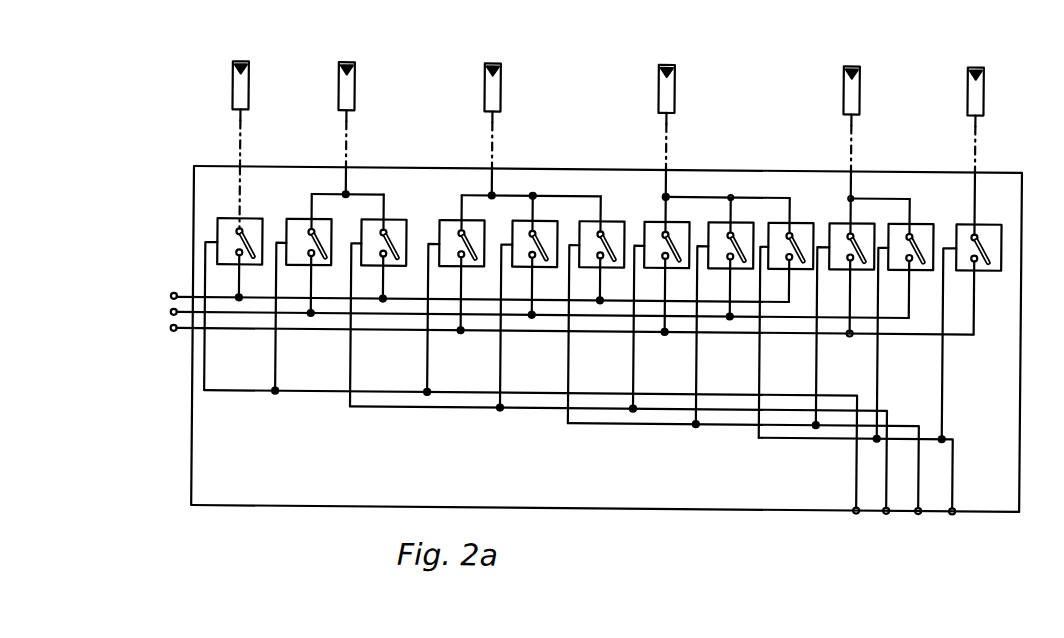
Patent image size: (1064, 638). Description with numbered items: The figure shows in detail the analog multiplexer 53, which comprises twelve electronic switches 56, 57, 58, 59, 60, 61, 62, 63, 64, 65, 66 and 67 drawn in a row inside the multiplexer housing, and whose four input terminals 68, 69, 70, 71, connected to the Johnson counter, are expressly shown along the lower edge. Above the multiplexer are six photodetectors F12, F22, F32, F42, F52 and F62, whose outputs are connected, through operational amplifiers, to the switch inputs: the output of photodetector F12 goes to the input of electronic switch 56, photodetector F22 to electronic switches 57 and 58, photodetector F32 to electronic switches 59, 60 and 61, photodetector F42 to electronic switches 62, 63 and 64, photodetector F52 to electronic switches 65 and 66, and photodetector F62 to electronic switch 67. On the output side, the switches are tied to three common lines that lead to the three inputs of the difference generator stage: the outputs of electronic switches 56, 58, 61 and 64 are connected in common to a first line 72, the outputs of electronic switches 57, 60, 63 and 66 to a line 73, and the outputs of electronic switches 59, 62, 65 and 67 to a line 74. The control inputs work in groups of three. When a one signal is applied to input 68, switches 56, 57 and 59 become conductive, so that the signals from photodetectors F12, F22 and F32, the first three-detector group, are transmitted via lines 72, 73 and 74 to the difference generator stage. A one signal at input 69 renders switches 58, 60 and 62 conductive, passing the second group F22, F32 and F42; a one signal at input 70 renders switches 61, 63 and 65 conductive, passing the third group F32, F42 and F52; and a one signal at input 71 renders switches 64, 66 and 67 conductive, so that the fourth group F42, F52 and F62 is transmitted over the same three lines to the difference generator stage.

The analog multiplexer 53 is at (1011, 261).
The electronic switch 56 is at (252, 230).
The electronic switch 57 is at (318, 228).
The electronic switch 58 is at (398, 230).
The electronic switch 59 is at (450, 230).
The electronic switch 60 is at (541, 231).
The electronic switch 61 is at (609, 230).
The electronic switch 62 is at (678, 228).
The electronic switch 63 is at (740, 228).
The electronic switch 64 is at (802, 228).
The electronic switch 65 is at (862, 226).
The electronic switch 66 is at (922, 226).
The electronic switch 67 is at (990, 227).
The input terminal 68 is at (857, 509).
The input terminal 69 is at (888, 509).
The input terminal 70 is at (920, 509).
The input terminal 71 is at (955, 509).
The first line 72 is at (173, 293).
The line 73 is at (171, 312).
The line 74 is at (173, 330).
The photodetector F12 is at (241, 80).
The photodetector F22 is at (352, 85).
The photodetector F32 is at (494, 82).
The photodetector F42 is at (670, 82).
The photodetector F52 is at (848, 84).
The photodetector F62 is at (972, 80).